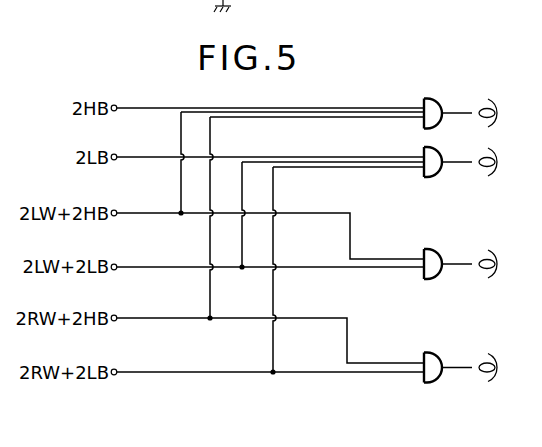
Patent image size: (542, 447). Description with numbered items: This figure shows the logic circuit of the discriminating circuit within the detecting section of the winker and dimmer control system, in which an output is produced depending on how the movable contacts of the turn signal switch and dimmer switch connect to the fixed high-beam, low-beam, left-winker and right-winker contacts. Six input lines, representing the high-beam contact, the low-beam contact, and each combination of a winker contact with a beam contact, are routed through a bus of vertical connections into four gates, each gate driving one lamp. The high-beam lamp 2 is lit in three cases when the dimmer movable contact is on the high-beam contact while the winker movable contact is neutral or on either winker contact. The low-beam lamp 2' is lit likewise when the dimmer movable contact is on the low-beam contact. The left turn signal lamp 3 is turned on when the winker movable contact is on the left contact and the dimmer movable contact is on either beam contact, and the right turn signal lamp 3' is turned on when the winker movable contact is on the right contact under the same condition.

The high-beam lamp 2 is at (485, 113).
The low-beam lamp 2' is at (487, 164).
The left turn signal lamp 3 is at (485, 266).
The right turn signal lamp 3' is at (488, 372).